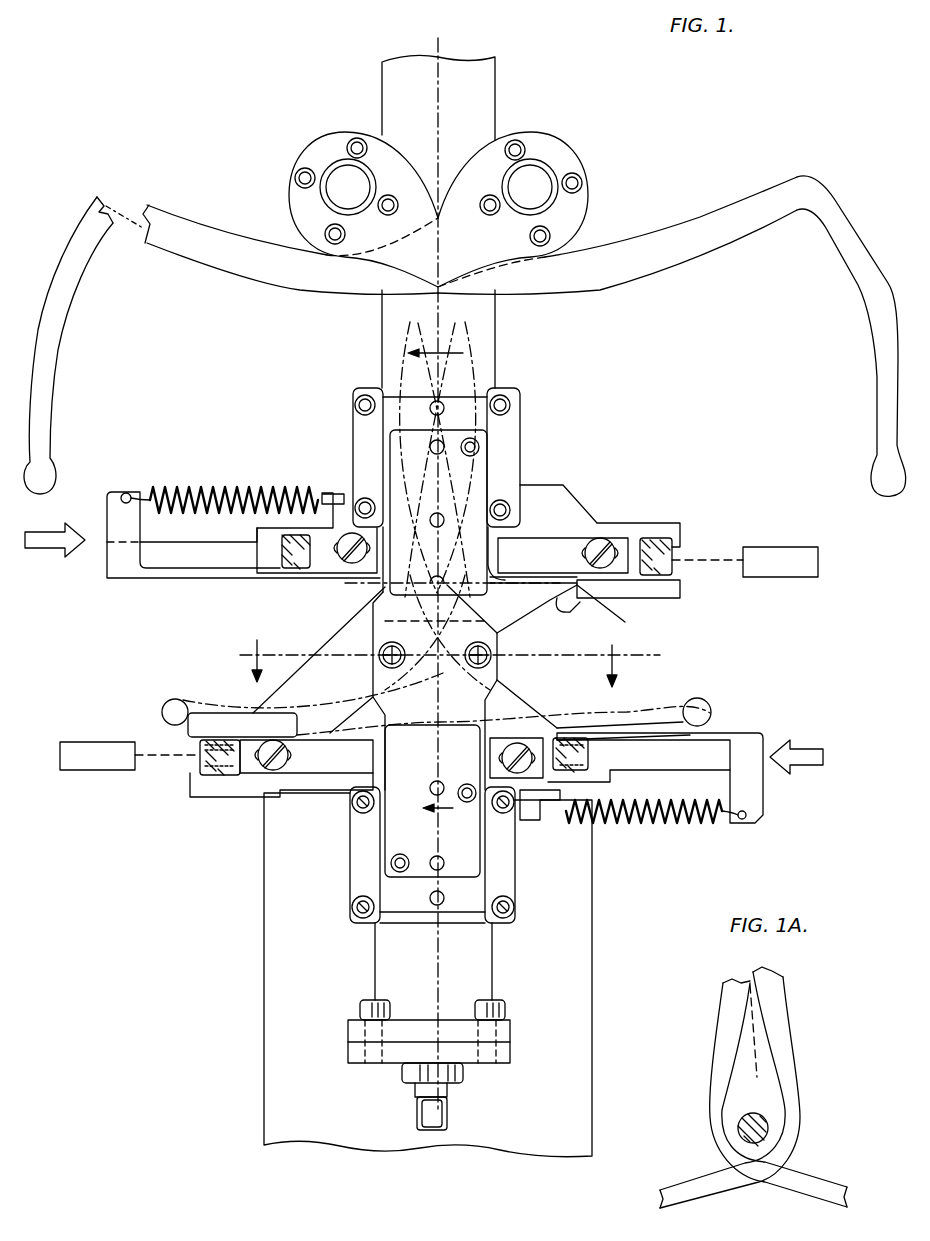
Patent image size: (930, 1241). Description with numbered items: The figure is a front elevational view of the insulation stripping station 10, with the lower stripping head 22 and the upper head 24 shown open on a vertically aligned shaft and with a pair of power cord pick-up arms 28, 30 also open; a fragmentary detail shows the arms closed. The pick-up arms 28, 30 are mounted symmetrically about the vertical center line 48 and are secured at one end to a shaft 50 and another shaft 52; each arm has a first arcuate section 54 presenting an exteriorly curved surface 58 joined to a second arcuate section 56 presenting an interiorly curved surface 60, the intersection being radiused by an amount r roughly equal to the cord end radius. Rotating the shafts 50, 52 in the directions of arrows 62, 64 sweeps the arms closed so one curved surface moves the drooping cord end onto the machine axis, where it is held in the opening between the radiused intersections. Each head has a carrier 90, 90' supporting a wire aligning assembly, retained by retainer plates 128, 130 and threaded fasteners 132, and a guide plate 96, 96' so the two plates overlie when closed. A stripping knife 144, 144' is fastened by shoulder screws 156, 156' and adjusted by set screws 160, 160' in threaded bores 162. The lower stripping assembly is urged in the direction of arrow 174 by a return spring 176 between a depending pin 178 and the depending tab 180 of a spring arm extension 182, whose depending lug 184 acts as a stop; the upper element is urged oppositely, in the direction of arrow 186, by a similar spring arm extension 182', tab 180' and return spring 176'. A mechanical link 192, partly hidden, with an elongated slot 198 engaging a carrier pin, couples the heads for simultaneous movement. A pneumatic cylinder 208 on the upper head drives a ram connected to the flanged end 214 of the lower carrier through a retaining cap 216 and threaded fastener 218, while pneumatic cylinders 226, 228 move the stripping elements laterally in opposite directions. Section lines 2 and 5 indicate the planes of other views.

In FIG. 1, the insulation stripping station 10 is at (588, 121).
In FIG. 1, the lower stripping head 22 is at (243, 932).
In FIG. 1, the upper head 24 is at (291, 464).
In FIG. 1, the power cord pick-up arm 28 is at (211, 226).
In FIG. 1A, the power cord pick-up arm 28 is at (714, 1093).
In FIG. 1, the power cord pick-up arm 30 is at (667, 234).
In FIG. 1A, the power cord pick-up arm 30 is at (797, 1085).
In FIG. 1, the vertical center line 48 is at (440, 44).
In FIG. 1, the shaft 50 is at (360, 199).
In FIG. 1, the shaft 52 is at (542, 199).
In FIG. 1, the arcuate section 54 is at (287, 279).
In FIG. 1, the second arcuate section 56 is at (66, 325).
In FIG. 1, the exteriorly curved surface 58 is at (328, 288).
In FIG. 1, the interiorly curved surface 60 is at (50, 414).
In FIG. 1, the arrow 62 is at (220, 328).
In FIG. 1, the arrow 64 is at (696, 320).
In FIG. 1, the carrier 90 is at (460, 961).
In FIG. 1, the carrier 90' is at (476, 339).
In FIG. 1, the guide plate 96 is at (432, 815).
In FIG. 1, the guide plate 96' is at (452, 498).
In FIG. 1, the retainer plate 128 is at (362, 888).
In FIG. 1, the retainer plate 130 is at (508, 885).
In FIG. 1, the threaded fasteners 132 is at (360, 916).
In FIG. 1, the stripping knife 144 is at (391, 801).
In FIG. 1, the stripping knife 144' is at (468, 541).
In FIG. 1, the shoulder screws 156 is at (375, 791).
In FIG. 1, the shoulder screws 156' is at (459, 572).
In FIG. 1, the set screws 160 is at (382, 785).
In FIG. 1, the set screws 160' is at (499, 524).
In FIG. 1, the threaded bores 162 is at (200, 762).
In FIG. 1, the arrow 174 is at (805, 745).
In FIG. 1, the return spring 176 is at (656, 831).
In FIG. 1, the return spring 176' is at (232, 475).
In FIG. 1, the depending pin 178 is at (528, 805).
In FIG. 1, the depending tab 180 is at (680, 778).
In FIG. 1, the depending tab 180' is at (221, 519).
In FIG. 1, the spring arm extension 182 is at (498, 733).
In FIG. 1, the spring arm extension 182' is at (167, 597).
In FIG. 1, the depending lug 184 is at (548, 820).
In FIG. 1, the arrow 186 is at (48, 550).
In FIG. 1, the mechanical link 192 is at (360, 679).
In FIG. 1, the elongated slot 198 is at (582, 604).
In FIG. 1, the pneumatic cylinder 208 is at (380, 109).
In FIG. 1, the flanged end 214 is at (510, 1032).
In FIG. 1, the retaining cap 216 is at (510, 1052).
In FIG. 1, the threaded fastener 218 is at (464, 1074).
In FIG. 1, the pneumatic cylinder 226 is at (95, 742).
In FIG. 1, the pneumatic cylinder 228 is at (778, 547).
In FIG. 1, the section line 2 is at (435, 591).
In FIG. 1, the section line 5 is at (425, 667).
In FIG. 1A, the radius r is at (770, 1120).